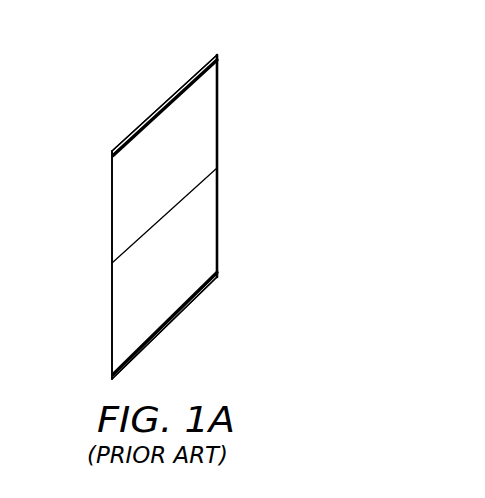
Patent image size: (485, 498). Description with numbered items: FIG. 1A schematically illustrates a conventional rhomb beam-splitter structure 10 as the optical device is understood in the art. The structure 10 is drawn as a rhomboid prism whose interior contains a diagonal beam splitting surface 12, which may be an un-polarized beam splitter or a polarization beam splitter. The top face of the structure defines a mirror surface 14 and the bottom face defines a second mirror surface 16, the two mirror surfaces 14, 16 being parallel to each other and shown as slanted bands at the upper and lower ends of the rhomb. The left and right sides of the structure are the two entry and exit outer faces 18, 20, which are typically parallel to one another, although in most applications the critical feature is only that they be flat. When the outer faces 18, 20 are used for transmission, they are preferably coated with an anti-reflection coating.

The rhomb beam-splitter structure 10 is at (108, 54).
The beam splitting surface 12 is at (165, 213).
The mirror surface 14 is at (205, 82).
The mirror surface 16 is at (165, 325).
The entry and exit outer face 18 is at (112, 200).
The entry and exit outer face 20 is at (218, 218).